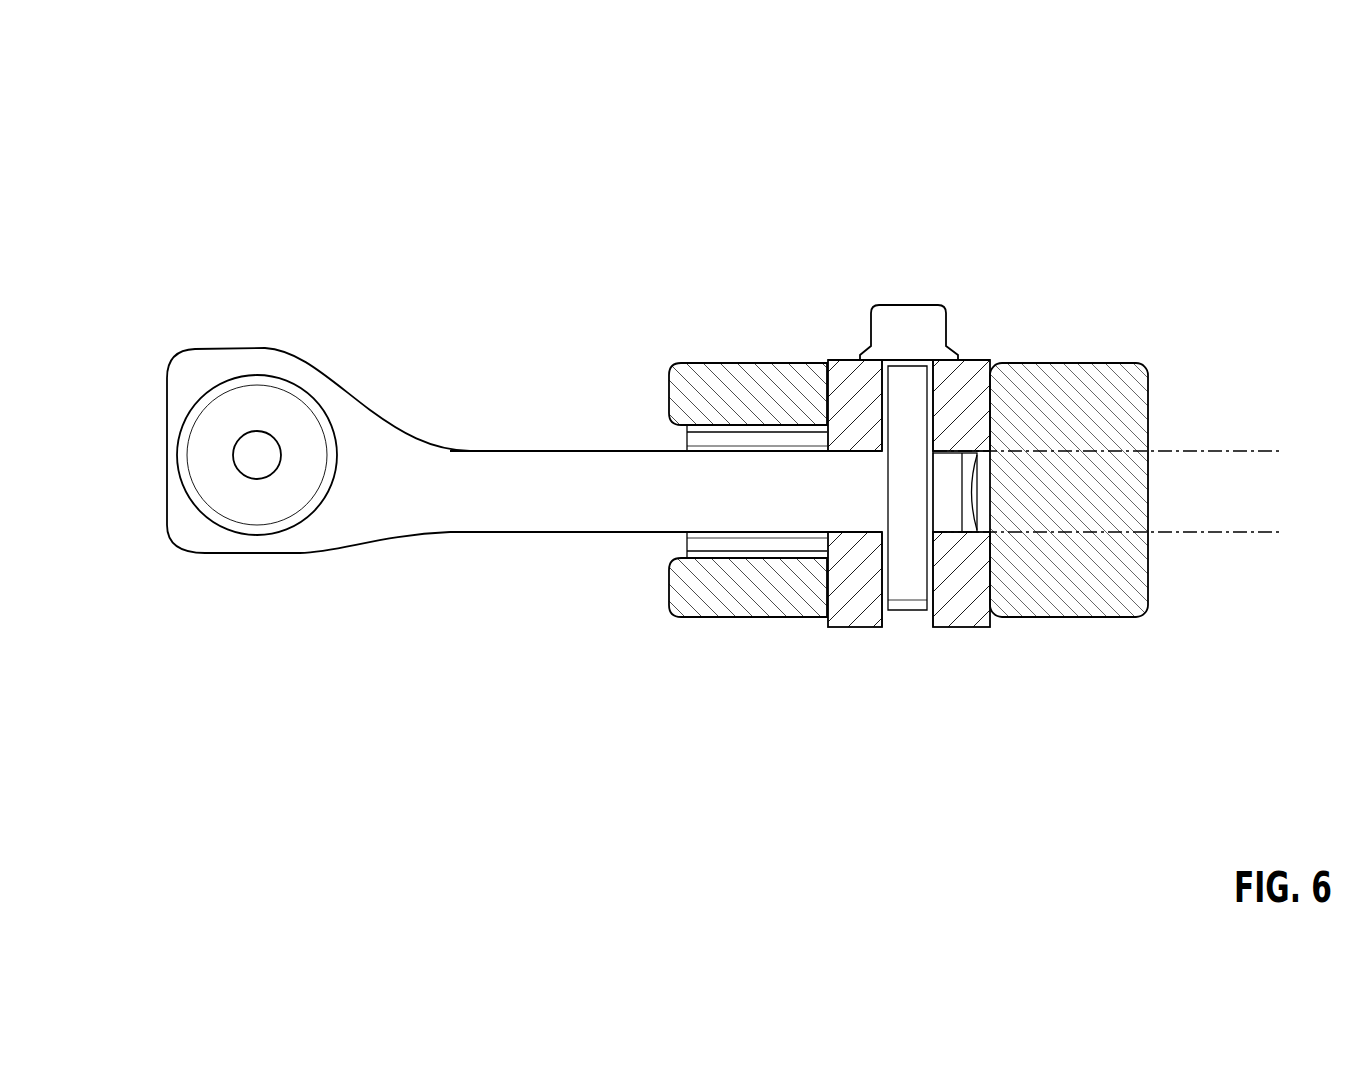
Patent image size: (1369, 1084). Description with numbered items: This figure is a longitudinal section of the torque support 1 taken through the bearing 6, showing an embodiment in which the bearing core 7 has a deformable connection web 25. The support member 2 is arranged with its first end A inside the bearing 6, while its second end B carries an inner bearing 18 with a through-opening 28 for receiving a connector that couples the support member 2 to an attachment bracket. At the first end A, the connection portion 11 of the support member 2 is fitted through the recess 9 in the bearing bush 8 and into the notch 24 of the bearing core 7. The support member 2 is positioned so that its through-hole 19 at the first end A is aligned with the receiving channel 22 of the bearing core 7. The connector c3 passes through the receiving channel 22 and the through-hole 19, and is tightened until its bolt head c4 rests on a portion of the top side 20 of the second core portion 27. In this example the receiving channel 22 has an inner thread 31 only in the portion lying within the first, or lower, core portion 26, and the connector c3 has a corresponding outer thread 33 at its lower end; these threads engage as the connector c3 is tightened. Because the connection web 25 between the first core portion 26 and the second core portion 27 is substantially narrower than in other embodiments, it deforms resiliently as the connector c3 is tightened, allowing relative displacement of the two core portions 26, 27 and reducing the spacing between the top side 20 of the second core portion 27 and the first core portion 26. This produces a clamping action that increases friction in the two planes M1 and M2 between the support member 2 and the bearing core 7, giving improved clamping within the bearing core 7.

The torque support 1 is at (545, 268).
The support member 2 is at (502, 440).
The bearing 6 is at (1118, 332).
The bearing core 7 is at (853, 635).
The bearing bush 8 is at (1113, 405).
The recess 9 is at (647, 430).
The connection portion 11 is at (692, 487).
The inner bearing 18 is at (257, 508).
The through-hole 19 is at (827, 427).
The top side 20 is at (970, 347).
The receiving channel 22 is at (903, 635).
The notch 24 is at (768, 494).
The connection web 25 is at (987, 487).
The first core portion 26 is at (963, 607).
The second core portion 27 is at (853, 378).
The through-opening 28 is at (256, 455).
The inner thread 31 is at (875, 557).
The outer thread 33 is at (893, 583).
The first end A is at (930, 230).
The second end B is at (237, 305).
The connector c3 is at (953, 383).
The bolt head c4 is at (902, 330).
The first friction plane M1 is at (1132, 450).
The second friction plane M2 is at (1132, 530).